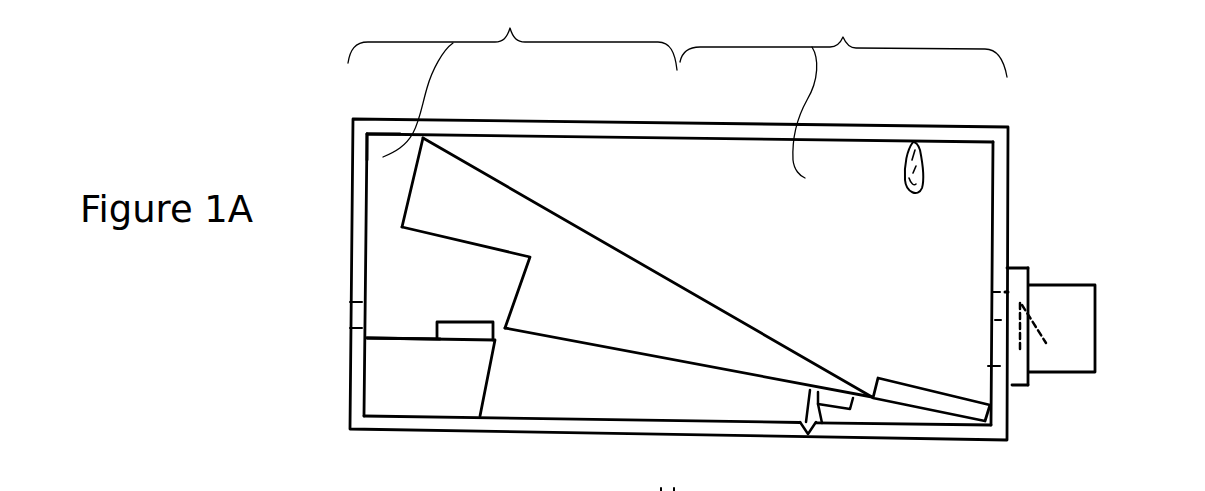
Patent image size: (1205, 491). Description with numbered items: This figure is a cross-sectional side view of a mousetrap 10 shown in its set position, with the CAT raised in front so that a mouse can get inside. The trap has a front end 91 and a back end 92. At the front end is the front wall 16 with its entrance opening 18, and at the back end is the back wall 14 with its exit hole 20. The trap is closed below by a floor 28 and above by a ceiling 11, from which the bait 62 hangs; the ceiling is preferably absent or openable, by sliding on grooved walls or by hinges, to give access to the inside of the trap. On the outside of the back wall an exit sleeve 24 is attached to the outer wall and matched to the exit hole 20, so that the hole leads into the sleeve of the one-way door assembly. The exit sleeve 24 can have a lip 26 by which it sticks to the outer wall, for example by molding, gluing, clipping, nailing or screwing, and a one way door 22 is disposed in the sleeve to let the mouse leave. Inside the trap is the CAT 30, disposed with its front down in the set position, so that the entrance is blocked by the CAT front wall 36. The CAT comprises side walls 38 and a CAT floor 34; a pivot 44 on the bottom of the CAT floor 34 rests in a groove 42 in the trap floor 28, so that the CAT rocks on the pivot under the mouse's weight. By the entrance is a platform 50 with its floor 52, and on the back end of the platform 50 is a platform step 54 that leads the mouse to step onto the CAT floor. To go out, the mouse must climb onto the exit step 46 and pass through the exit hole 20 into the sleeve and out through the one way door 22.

The mousetrap 10 is at (302, 52).
The ceiling 11 is at (627, 122).
The back wall 14 is at (1010, 187).
The front wall 16 is at (350, 138).
The entrance opening 18 is at (350, 302).
The exit hole 20 is at (995, 320).
The one way door 22 is at (1020, 332).
The exit sleeve 24 is at (1072, 288).
The lip 26 is at (1021, 268).
The floor 28 is at (640, 418).
The CAT 30 is at (592, 233).
The CAT floor 34 is at (595, 345).
The CAT front wall 36 is at (403, 210).
The side walls 38 is at (515, 228).
The groove 42 is at (801, 436).
The pivot 44 is at (808, 437).
The exit step 46 is at (950, 404).
The platform 50 is at (377, 390).
The floor 52 is at (386, 343).
The platform step 54 is at (453, 332).
The bait 62 is at (913, 142).
The front end 91 is at (512, 82).
The back end 92 is at (843, 96).